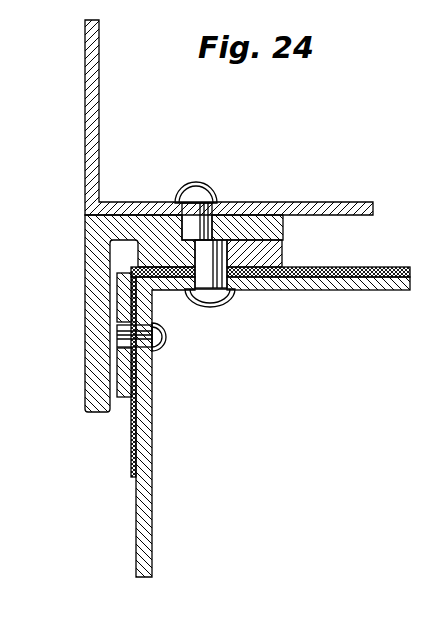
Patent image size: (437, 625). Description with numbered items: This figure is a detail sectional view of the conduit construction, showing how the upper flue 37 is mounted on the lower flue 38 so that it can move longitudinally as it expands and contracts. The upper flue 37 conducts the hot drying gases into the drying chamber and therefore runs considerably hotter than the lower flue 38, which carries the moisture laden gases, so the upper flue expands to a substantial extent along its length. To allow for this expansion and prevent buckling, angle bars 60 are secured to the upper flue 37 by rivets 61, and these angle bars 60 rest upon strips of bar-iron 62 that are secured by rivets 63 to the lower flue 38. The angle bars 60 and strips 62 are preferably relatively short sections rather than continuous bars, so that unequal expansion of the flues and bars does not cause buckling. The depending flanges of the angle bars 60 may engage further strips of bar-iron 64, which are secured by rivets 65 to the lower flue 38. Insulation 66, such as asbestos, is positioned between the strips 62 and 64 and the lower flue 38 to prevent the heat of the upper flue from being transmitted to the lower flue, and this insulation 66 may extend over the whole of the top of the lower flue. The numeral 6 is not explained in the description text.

The upper flue 37 is at (93, 138).
The angle bar 60 is at (105, 240).
The rivet 61 is at (205, 192).
The strip of bar-iron 62 is at (258, 258).
The rivet 63 is at (213, 303).
The sealing strip 6 is at (322, 270).
The lower flue 38 is at (350, 290).
The strip of bar-iron 64 is at (125, 381).
The rivet 65 is at (167, 352).
The insulation 66 is at (133, 446).